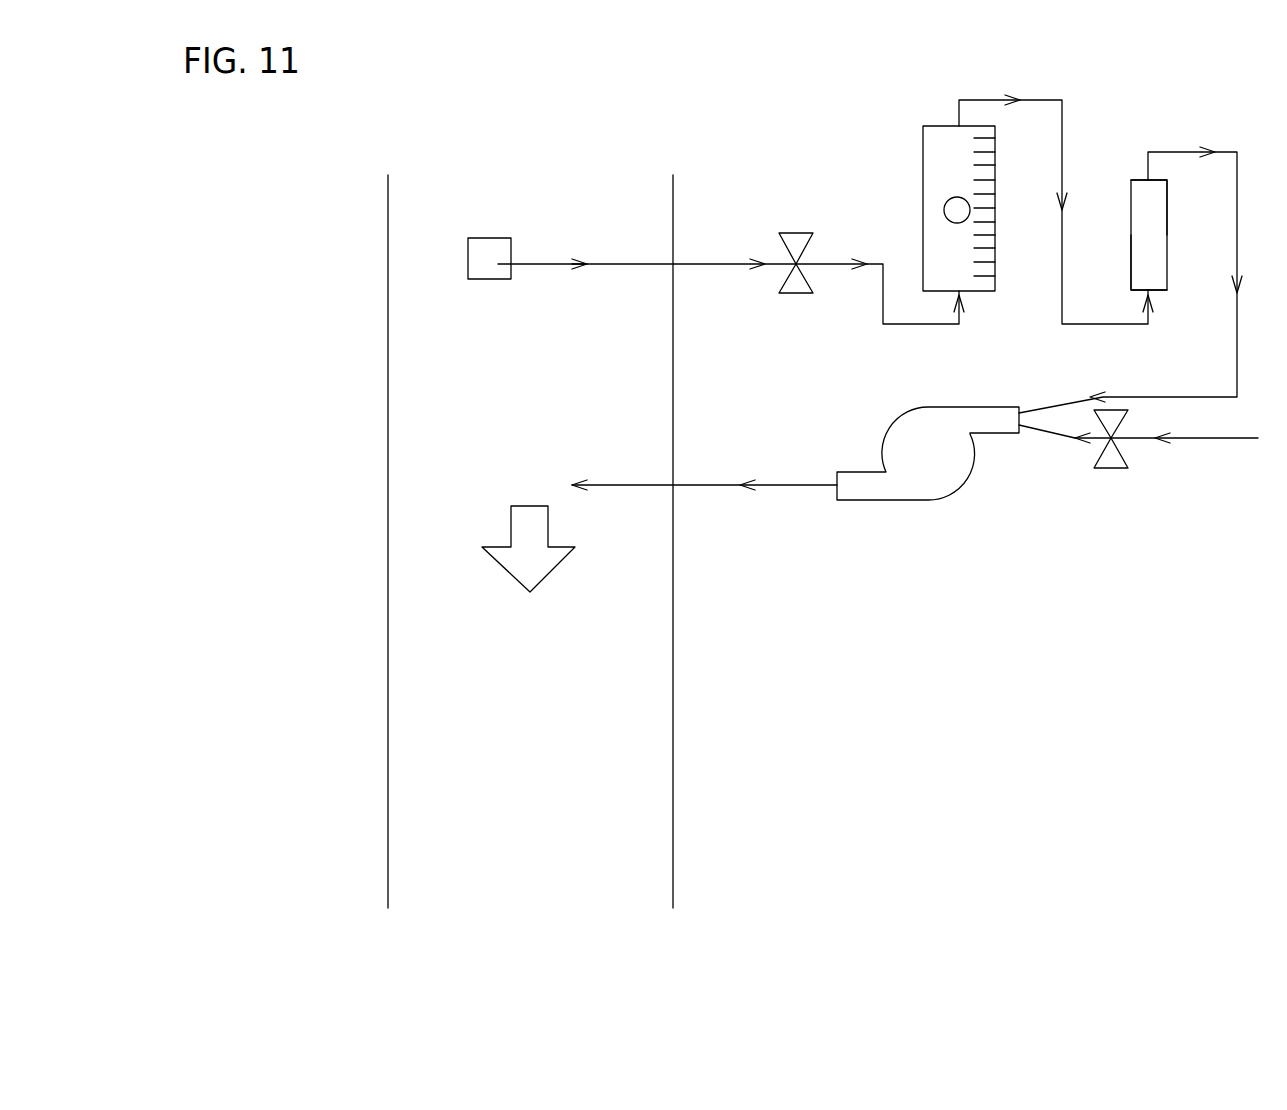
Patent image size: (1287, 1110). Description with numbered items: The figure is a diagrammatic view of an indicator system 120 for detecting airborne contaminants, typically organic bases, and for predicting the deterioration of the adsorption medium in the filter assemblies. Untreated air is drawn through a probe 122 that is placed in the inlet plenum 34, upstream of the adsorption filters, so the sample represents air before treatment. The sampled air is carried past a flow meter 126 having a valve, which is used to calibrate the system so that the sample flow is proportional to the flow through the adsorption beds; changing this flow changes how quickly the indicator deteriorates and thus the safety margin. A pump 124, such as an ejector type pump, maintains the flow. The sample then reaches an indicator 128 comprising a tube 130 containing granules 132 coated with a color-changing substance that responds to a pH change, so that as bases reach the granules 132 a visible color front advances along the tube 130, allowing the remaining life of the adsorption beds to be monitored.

The inlet plenum 34 is at (450, 448).
The indicator system 120 is at (773, 143).
The probe 122 is at (488, 250).
The pump 124 is at (932, 475).
The flow meter 126 is at (943, 158).
The indicator 128 is at (1150, 228).
The tube 130 is at (1131, 193).
The granules 132 is at (1143, 258).